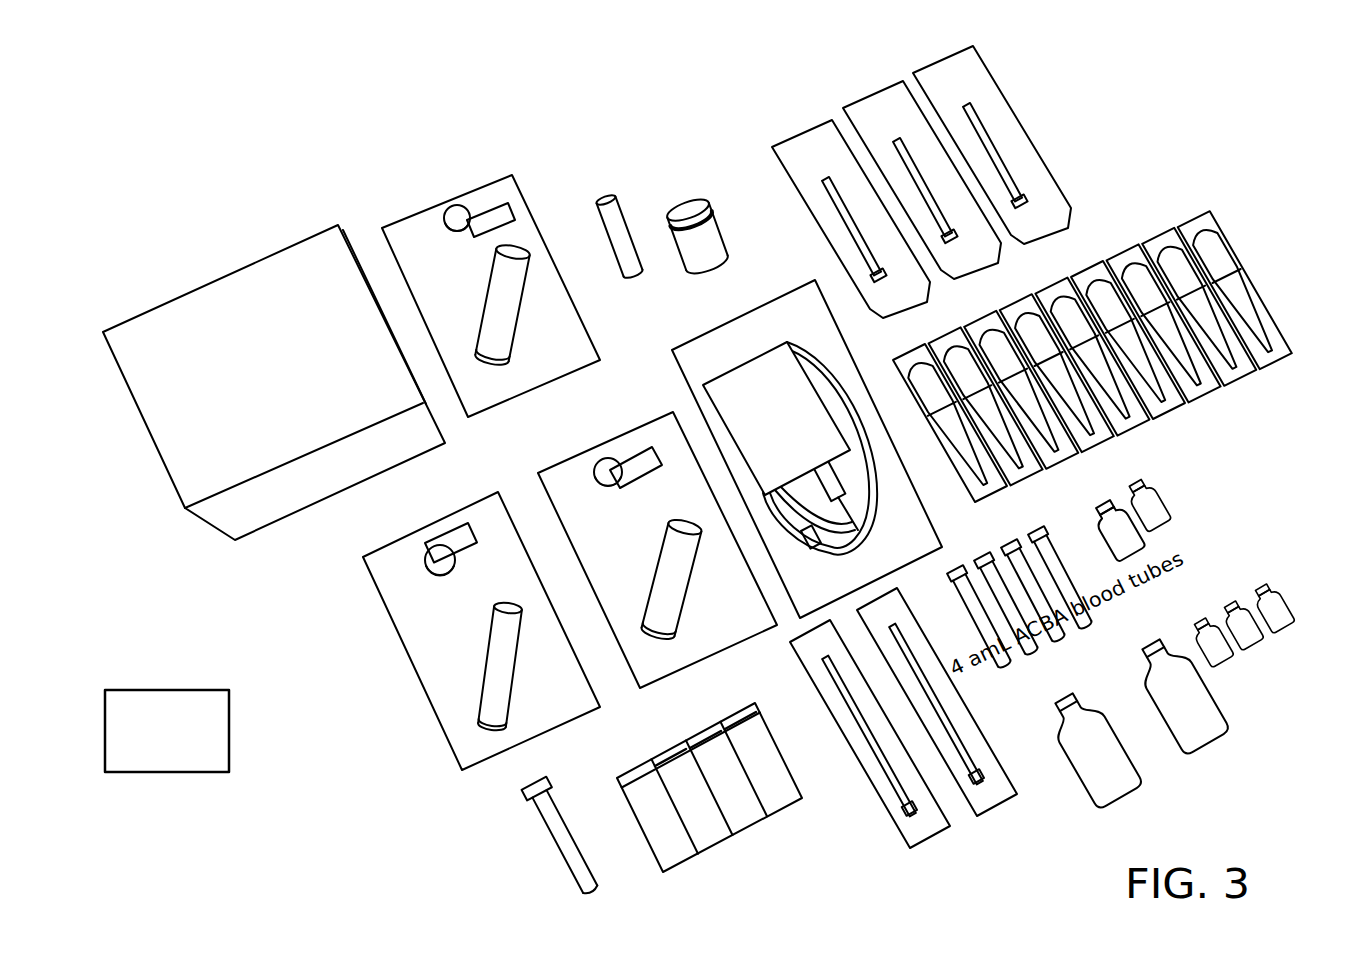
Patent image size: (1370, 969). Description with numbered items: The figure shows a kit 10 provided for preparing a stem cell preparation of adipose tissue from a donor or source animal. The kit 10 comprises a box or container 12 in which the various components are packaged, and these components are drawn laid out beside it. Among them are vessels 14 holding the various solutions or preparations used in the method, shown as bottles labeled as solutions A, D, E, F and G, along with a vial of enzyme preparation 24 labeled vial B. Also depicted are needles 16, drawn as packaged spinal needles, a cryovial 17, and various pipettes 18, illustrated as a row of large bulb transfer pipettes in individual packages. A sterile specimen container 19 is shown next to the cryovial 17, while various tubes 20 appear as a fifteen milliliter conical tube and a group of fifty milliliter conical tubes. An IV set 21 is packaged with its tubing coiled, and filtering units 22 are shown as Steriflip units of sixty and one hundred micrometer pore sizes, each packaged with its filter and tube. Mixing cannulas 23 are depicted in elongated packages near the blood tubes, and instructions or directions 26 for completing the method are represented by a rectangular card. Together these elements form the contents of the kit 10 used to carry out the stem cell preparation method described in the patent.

The kit 10 is at (274, 358).
The box or container 12 is at (222, 520).
The vessels 14 is at (1143, 535).
The needles 16 is at (962, 222).
The cryovial 17 is at (607, 235).
The pipettes 18 is at (1135, 280).
The sterile specimen container 19 is at (719, 226).
The tubes 20 is at (668, 742).
The IV set 21 is at (798, 600).
The filtering units 22 is at (517, 187).
The mixing cannulas 23 is at (960, 788).
The vial of enzyme preparation 24 is at (1165, 513).
The instructions or directions 26 is at (216, 731).